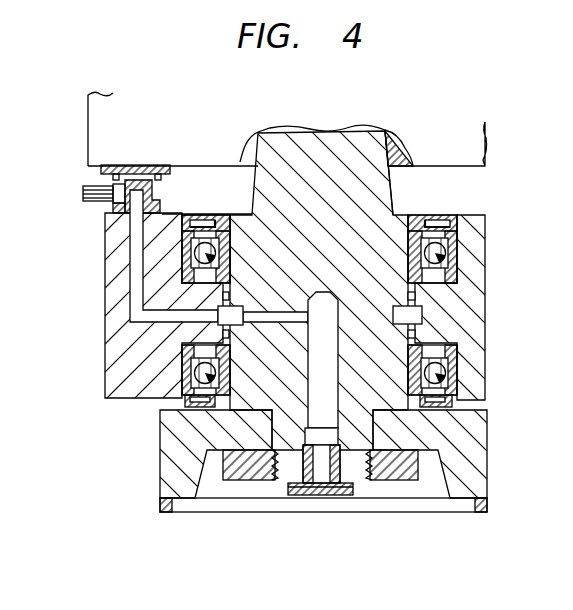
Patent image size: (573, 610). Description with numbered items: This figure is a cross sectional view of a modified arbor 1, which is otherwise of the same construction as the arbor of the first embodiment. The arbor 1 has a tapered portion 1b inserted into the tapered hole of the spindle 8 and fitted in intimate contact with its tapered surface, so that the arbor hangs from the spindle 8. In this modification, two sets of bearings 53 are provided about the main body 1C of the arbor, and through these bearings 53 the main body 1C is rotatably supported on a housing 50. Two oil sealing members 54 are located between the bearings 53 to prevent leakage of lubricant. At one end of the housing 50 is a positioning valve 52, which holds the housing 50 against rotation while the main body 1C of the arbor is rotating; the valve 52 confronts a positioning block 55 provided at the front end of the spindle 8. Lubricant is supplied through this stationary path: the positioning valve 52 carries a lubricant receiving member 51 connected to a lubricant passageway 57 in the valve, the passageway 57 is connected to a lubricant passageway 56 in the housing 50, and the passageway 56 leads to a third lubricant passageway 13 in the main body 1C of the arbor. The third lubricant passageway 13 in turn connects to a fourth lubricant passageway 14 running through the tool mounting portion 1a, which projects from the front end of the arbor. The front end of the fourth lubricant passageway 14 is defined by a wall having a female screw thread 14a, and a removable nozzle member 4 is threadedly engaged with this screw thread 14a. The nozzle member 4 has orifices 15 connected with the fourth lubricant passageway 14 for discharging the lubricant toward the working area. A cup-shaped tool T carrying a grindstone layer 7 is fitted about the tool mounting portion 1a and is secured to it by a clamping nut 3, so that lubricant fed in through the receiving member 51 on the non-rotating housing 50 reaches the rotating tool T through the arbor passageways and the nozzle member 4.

The arbor 1 is at (348, 142).
The tool mounting portion 1a is at (355, 423).
The tapered portion 1b is at (370, 186).
The main body of the arbor 1C is at (380, 317).
The clamping nut 3 is at (405, 470).
The nozzle member 4 is at (318, 488).
The grindstone layer 7 is at (167, 513).
The spindle 8 is at (95, 112).
The third lubricant passageway 13 is at (257, 316).
The fourth lubricant passageway 14 is at (330, 353).
The female screw thread 14a is at (307, 440).
The orifices 15 is at (337, 470).
The housing 50 is at (463, 275).
The lubricant receiving member 51 is at (83, 195).
The positioning valve 52 is at (113, 208).
The bearings 53 is at (187, 362).
The oil sealing members 54 is at (222, 296).
The positioning block 55 is at (103, 170).
The lubricant passageway in the housing 56 is at (137, 252).
The lubricant passageway in the positioning valve 57 is at (134, 183).
The cup-shaped tool T is at (165, 437).